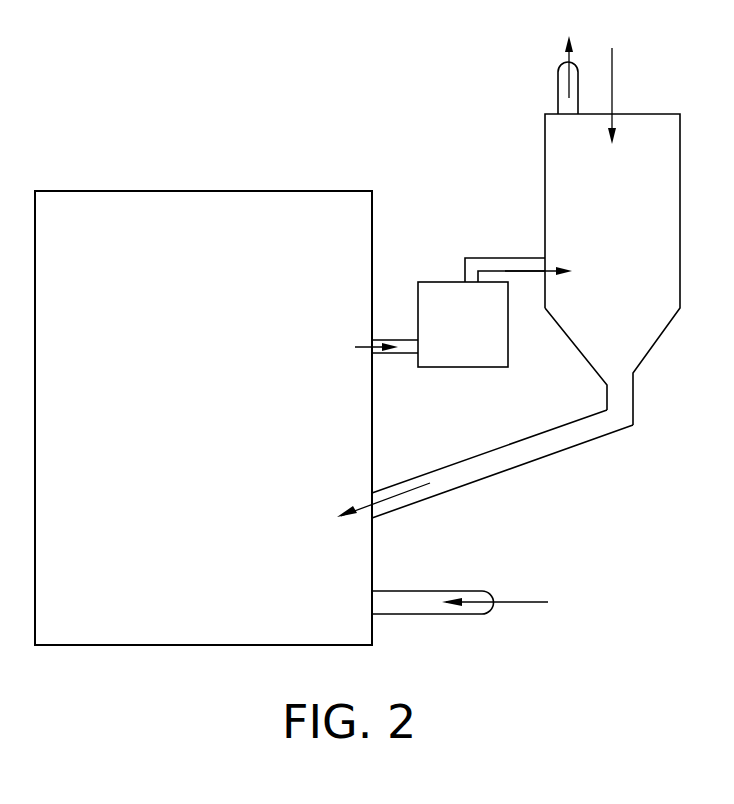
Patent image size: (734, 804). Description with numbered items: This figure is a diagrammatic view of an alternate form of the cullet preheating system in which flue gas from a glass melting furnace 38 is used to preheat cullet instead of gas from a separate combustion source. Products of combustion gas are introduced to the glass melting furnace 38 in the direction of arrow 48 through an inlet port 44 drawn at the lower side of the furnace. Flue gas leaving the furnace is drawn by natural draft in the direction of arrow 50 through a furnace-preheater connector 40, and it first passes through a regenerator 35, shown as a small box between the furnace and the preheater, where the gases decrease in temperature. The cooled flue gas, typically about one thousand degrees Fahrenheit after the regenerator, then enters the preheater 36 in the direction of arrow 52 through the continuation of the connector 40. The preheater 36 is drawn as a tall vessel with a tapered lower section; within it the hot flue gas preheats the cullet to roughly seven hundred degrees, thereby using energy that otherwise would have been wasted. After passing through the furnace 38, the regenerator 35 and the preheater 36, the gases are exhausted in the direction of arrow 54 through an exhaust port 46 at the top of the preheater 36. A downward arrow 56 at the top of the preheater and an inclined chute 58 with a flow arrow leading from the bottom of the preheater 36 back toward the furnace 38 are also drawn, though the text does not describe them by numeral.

The regenerator 35 is at (508, 345).
The preheater 36 is at (680, 188).
The glass melting furnace 38 is at (372, 420).
The furnace-preheater connector 40 is at (490, 258).
The inlet port 44 is at (408, 591).
The exhaust port 46 is at (558, 83).
The arrow 48 is at (515, 603).
The arrow 50 is at (376, 340).
The arrow 52 is at (528, 266).
The arrow 54 is at (578, 82).
The inlet flow arrow 56 is at (612, 60).
The return chute 58 is at (412, 490).